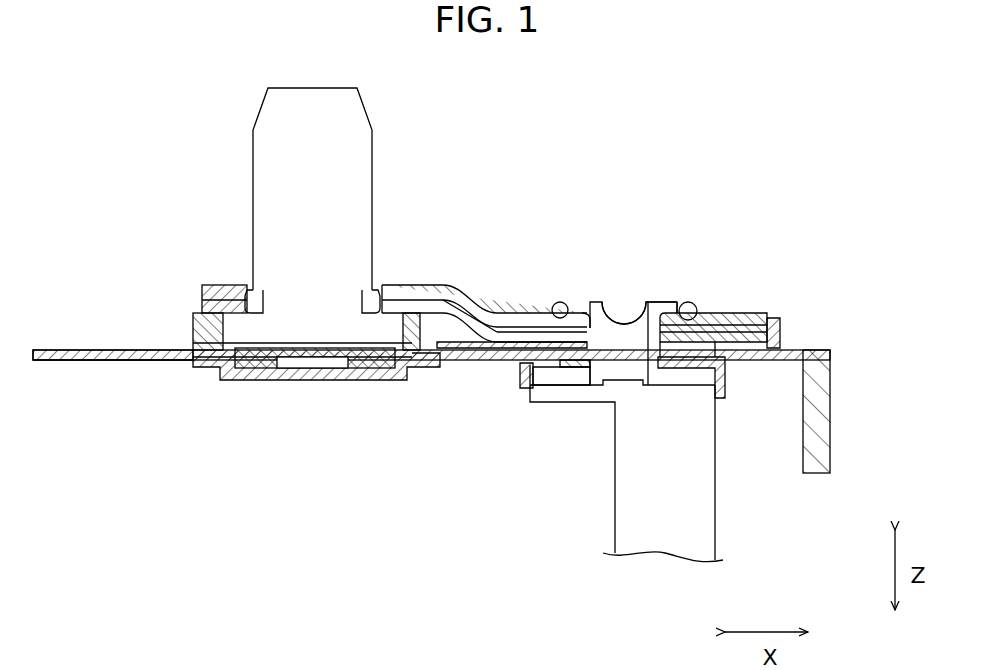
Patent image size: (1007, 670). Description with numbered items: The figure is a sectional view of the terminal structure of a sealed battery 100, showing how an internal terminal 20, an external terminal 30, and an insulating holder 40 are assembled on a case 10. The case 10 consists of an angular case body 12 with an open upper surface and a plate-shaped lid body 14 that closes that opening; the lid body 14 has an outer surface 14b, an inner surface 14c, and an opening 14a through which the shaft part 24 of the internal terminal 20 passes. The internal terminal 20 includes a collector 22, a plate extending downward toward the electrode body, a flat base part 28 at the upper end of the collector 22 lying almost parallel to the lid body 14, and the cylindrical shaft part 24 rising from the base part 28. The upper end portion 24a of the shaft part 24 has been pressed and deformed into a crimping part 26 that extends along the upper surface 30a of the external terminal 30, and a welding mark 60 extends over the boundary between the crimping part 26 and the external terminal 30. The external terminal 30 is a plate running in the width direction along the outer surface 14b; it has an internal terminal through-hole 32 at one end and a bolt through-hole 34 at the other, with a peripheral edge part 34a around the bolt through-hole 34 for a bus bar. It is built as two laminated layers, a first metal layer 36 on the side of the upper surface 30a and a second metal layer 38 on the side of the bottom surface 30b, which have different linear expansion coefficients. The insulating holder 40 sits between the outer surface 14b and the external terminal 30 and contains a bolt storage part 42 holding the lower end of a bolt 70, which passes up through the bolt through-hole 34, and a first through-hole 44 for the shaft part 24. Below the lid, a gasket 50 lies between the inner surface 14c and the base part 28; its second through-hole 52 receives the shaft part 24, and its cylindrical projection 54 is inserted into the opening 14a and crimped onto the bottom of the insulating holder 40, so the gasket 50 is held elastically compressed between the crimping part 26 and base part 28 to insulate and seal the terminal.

The sealed battery 100 is at (160, 82).
The bolt 70 is at (255, 162).
The peripheral edge part 34a is at (212, 287).
The bolt through-hole 34 is at (378, 288).
The external terminal 30 is at (433, 190).
The first metal layer 36 is at (432, 285).
The second metal layer 38 is at (447, 287).
The welding mark 60 is at (553, 304).
The internal terminal through-hole 32 is at (590, 305).
The shaft part 24 is at (615, 303).
The upper end portion 24a is at (650, 302).
The crimping part 26 is at (673, 303).
The upper surface 30a is at (752, 311).
The bottom surface 30b is at (760, 355).
The lid body 14 is at (798, 350).
The case body 12 is at (830, 390).
The case 10 is at (900, 313).
The outer surface 14b is at (92, 350).
The inner surface 14c is at (88, 360).
The insulating holder 40 is at (193, 337).
The bolt storage part 42 is at (267, 372).
The gasket 50 is at (512, 373).
The base part 28 is at (523, 385).
The opening 14a is at (545, 380).
The first through-hole 44 is at (585, 372).
The internal terminal 20 is at (612, 505).
The collector 22 is at (715, 530).
The second through-hole 52 is at (650, 385).
The cylindrical projection 54 is at (700, 385).